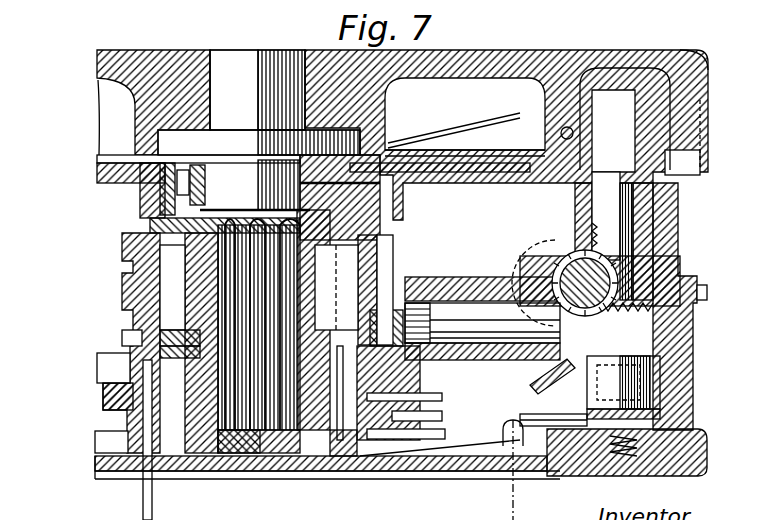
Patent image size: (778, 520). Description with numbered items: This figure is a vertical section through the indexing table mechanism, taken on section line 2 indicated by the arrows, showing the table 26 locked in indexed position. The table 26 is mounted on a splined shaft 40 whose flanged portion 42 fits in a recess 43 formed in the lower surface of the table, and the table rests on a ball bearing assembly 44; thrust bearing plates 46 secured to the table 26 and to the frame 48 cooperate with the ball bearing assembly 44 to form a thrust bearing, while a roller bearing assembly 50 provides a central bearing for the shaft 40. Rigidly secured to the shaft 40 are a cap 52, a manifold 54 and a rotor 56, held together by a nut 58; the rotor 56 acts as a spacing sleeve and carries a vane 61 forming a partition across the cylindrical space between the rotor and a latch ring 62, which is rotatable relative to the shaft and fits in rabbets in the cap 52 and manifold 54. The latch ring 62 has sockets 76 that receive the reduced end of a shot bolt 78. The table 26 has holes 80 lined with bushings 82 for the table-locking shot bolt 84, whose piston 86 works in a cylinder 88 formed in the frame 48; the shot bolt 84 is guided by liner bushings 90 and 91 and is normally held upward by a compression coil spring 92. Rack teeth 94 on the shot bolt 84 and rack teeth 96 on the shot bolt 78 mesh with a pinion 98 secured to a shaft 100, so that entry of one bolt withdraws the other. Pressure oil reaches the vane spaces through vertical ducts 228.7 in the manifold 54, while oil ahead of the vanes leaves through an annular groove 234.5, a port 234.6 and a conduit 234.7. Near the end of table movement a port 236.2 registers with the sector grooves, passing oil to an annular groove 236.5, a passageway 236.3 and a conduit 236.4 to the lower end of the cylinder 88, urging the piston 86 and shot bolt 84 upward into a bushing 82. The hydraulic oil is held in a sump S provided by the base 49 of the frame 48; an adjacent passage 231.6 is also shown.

The section line 2- 2 is at (90, 232).
The table 26 is at (700, 90).
The splined shaft 40 is at (262, 56).
The flanged portion 42 is at (232, 130).
The recess 43 is at (259, 142).
The ball bearing assembly 44 is at (493, 173).
The thrust bearing plates 46 is at (493, 167).
The frame 48 is at (672, 240).
The base 49 is at (705, 467).
The roller bearing assembly 50 is at (357, 192).
The cap 52 is at (150, 226).
The manifold 54 is at (180, 445).
The rotor 56 is at (160, 292).
The nut 58 is at (305, 445).
The vane 61 is at (370, 268).
The latch ring 62 is at (122, 280).
The sockets 76 is at (130, 338).
The shot bolt 78 is at (460, 305).
The holes 80 is at (706, 110).
The bushings 82 is at (706, 66).
The table-locking shot bolt 84 is at (650, 200).
The piston 86 is at (665, 382).
The cylinder 88 is at (665, 412).
The liner bushing 90 is at (650, 217).
The liner bushing 91 is at (668, 330).
The compression coil spring 92 is at (700, 422).
The rack teeth 94 is at (600, 228).
The rack teeth 96 is at (555, 318).
The pinion 98 is at (560, 285).
The shaft 100 is at (115, 405).
The vertical ducts 228.7 is at (321, 393).
The block 231.6 is at (328, 419).
The annular groove 234.5 is at (150, 420).
The port 234.6 is at (365, 445).
The conduit 234.7 is at (442, 416).
The port 236.2 is at (165, 330).
The passageway 236.3 is at (135, 380).
The conduit 236.4 is at (145, 510).
The annular groove 236.5 is at (165, 352).
The sump S is at (480, 452).